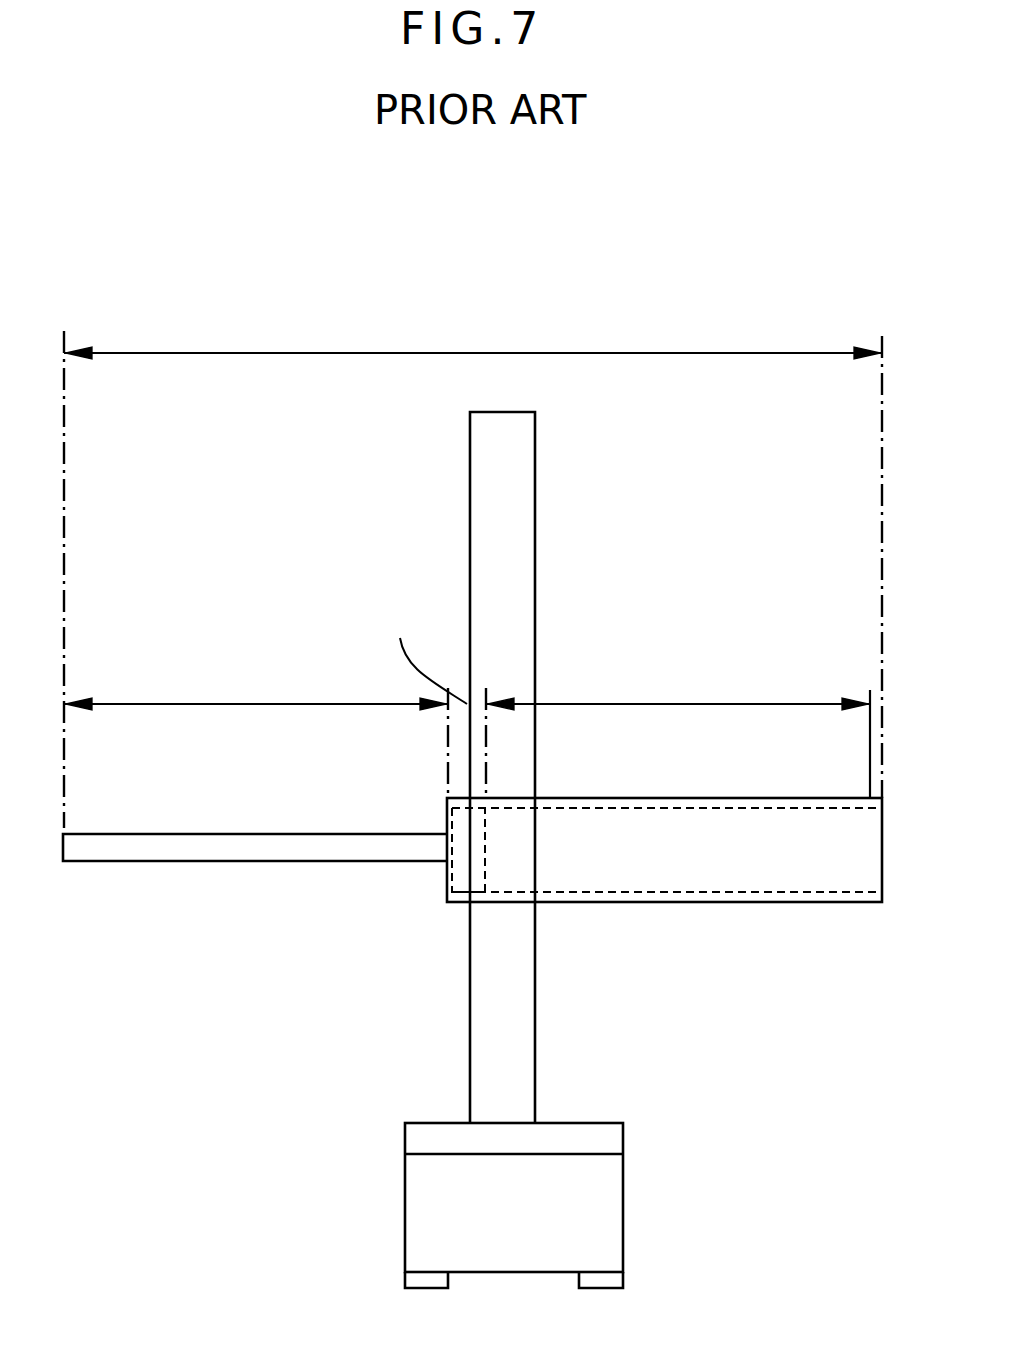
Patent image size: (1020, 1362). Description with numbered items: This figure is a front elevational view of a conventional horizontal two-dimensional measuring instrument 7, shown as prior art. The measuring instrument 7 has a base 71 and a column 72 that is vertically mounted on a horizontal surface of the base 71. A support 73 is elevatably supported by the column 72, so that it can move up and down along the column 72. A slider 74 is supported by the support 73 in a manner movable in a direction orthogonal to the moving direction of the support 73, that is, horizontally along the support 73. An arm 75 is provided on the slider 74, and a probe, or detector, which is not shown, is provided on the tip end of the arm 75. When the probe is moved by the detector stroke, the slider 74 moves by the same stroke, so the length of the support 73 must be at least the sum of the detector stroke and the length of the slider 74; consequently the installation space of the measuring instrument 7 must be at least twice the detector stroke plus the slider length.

The measuring instrument 7 is at (733, 326).
The base 71 is at (428, 1227).
The column 72 is at (520, 1045).
The support 73 is at (710, 903).
The slider 74 is at (463, 876).
The arm 75 is at (183, 852).